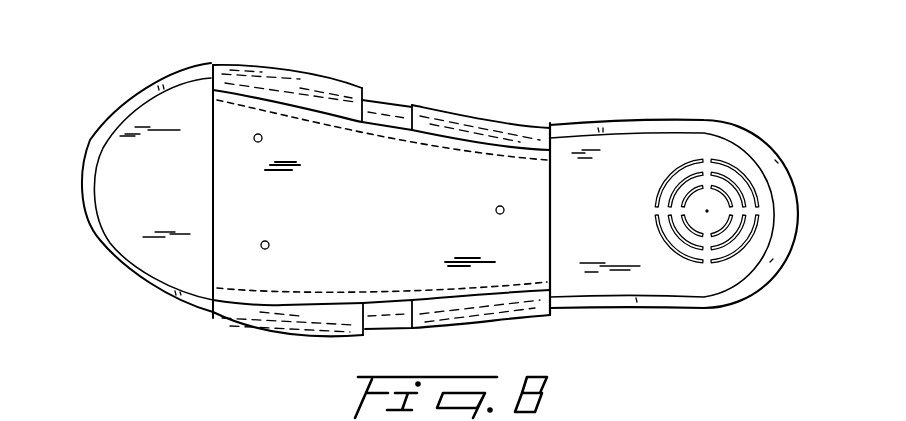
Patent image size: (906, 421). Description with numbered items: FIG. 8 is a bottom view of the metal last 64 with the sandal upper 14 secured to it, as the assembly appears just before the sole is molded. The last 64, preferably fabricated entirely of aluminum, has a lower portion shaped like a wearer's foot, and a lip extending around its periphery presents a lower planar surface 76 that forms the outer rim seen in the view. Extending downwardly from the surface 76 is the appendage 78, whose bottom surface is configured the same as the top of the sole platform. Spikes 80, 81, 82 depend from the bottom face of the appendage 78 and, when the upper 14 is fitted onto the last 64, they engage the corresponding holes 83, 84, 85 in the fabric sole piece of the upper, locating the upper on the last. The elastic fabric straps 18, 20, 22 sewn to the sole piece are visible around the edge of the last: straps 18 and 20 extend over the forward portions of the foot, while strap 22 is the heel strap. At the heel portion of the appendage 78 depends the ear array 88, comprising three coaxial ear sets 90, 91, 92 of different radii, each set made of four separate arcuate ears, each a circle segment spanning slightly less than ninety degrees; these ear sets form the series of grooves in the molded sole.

The upper 14 is at (457, 263).
The strap 18 is at (272, 80).
The strap 20 is at (465, 117).
The heel strap 22 is at (395, 107).
The last 64 is at (100, 240).
The lower planar surface 76 is at (145, 92).
The appendage 78 is at (118, 168).
The spike 80 is at (256, 143).
The spike 81 is at (267, 243).
The spike 82 is at (500, 206).
The hole 83 is at (263, 139).
The hole 84 is at (270, 246).
The hole 85 is at (528, 167).
The ear array 88 is at (740, 168).
The ear set 90 is at (685, 195).
The ear set 91 is at (695, 173).
The ear set 92 is at (664, 180).